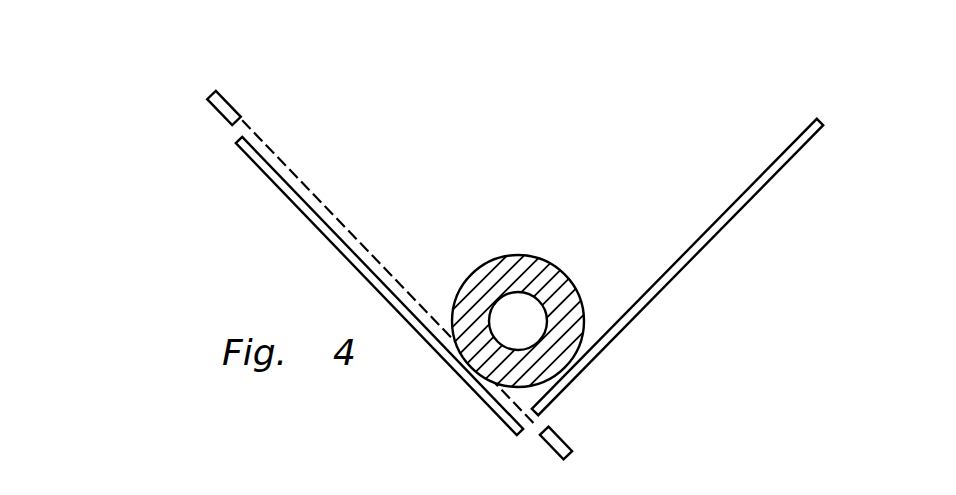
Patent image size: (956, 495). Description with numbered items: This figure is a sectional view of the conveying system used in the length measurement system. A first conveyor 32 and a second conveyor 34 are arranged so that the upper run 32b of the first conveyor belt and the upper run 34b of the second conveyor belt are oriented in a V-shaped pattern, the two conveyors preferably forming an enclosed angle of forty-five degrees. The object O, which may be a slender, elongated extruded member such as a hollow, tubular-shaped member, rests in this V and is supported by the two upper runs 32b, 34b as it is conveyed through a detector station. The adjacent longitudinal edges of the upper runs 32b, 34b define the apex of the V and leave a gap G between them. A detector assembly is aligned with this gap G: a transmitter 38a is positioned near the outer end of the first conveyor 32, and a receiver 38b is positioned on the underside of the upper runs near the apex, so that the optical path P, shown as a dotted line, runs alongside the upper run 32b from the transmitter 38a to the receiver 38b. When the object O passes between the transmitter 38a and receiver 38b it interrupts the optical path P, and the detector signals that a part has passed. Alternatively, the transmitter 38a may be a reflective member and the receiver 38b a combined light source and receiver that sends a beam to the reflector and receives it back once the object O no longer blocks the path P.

The first conveyor 32 is at (240, 199).
The upper run of first conveyor belt 32b is at (246, 158).
The second conveyor 34 is at (778, 217).
The upper run of second conveyor belt 34b is at (801, 153).
The transmitter 38a is at (229, 99).
The receiver 38b is at (569, 441).
The optical path P is at (364, 222).
The object O is at (520, 244).
The gap G is at (547, 420).